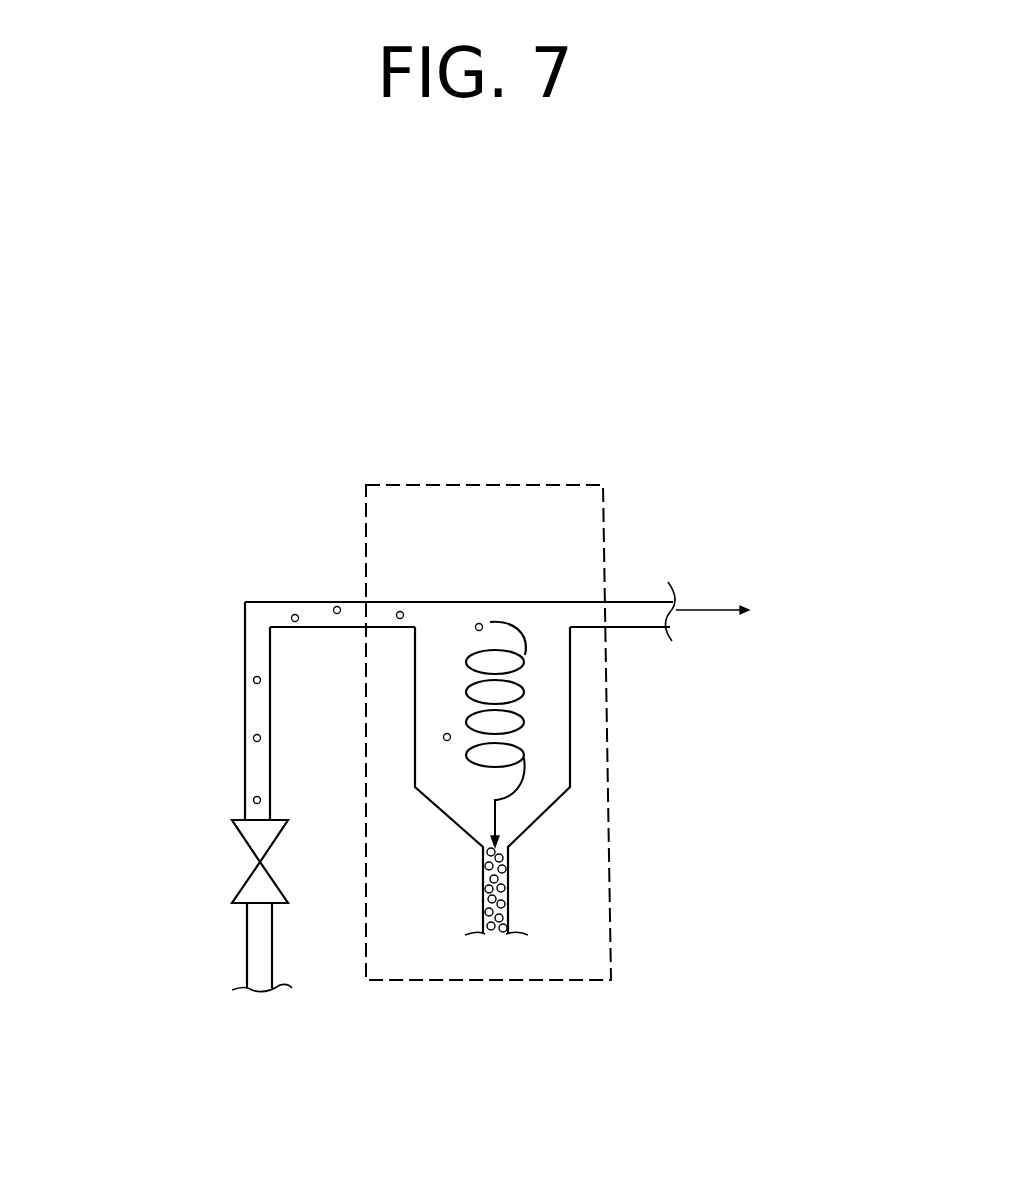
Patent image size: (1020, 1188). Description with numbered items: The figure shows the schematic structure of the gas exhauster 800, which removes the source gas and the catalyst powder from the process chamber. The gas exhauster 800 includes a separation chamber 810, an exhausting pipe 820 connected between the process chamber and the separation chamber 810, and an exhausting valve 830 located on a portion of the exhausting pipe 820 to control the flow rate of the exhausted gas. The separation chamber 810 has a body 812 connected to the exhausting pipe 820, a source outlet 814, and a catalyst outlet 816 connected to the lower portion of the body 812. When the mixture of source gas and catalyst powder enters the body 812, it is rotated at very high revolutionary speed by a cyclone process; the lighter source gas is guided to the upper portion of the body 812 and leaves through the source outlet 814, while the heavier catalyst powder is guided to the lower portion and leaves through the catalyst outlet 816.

The gas exhauster 800 is at (512, 303).
The separation chamber 810 is at (586, 482).
The body 812 is at (478, 600).
The source outlet 814 is at (582, 604).
The catalyst outlet 816 is at (510, 892).
The exhausting pipe 820 is at (245, 777).
The exhausting valve 830 is at (258, 878).